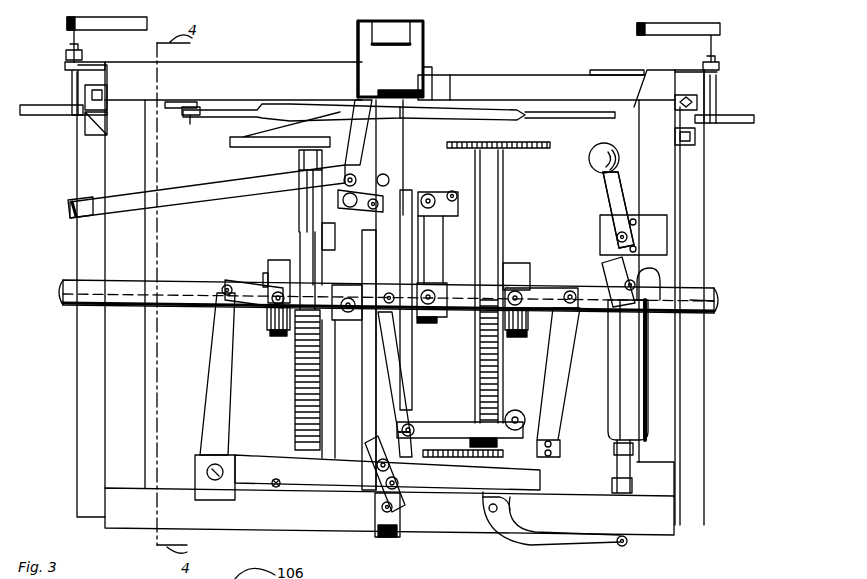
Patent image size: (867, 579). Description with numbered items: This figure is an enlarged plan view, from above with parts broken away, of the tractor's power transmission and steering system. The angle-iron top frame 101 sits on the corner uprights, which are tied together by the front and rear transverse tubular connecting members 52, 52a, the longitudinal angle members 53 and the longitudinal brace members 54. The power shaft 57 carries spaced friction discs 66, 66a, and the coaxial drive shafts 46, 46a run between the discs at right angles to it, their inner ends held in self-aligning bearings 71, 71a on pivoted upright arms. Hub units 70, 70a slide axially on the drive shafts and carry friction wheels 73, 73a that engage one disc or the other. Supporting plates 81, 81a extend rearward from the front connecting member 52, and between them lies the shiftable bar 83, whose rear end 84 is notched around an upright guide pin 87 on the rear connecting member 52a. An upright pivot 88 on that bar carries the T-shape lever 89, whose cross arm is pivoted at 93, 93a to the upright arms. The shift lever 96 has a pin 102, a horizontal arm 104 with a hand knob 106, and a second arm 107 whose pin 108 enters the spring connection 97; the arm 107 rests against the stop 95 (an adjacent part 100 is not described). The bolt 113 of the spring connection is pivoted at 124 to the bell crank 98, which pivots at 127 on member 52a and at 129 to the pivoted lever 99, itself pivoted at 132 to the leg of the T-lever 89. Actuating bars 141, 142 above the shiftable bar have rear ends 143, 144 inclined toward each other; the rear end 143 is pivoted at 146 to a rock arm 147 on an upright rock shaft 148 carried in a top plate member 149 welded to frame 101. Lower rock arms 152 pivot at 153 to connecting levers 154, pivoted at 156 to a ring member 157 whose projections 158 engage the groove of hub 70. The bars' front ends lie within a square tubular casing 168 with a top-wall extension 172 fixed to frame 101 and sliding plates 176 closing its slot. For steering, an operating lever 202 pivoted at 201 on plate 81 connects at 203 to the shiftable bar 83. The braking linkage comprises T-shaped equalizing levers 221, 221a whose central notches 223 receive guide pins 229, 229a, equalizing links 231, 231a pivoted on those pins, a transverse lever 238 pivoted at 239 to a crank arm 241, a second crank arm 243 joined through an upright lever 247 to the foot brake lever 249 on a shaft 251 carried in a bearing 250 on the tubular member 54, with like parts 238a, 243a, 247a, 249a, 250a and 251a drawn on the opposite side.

The top frame 101 is at (244, 58).
The front connecting member 52 is at (520, 78).
The longitudinal angle members 53 is at (100, 230).
The longitudinal brace members 54 is at (85, 251).
The rear connecting member 52a is at (467, 515).
The bolt 113 is at (674, 462).
The foot brake lever 249 is at (72, 33).
The upright lever 247 is at (66, 57).
The second crank arm 243 is at (95, 65).
The shaft 251 is at (35, 115).
The bearing 250 is at (87, 120).
The bolt 249a is at (714, 52).
The nut 247a is at (720, 70).
The bracket 243a is at (621, 70).
The block 250a is at (690, 115).
The rod 251a is at (734, 124).
The extension 172 is at (394, 73).
The sliding plates 176 is at (410, 30).
The square tubular casing 168 is at (358, 33).
The supporting plate 81a is at (440, 95).
The supporting plate 81 is at (347, 127).
The lever 238 is at (294, 97).
The bar 238a is at (550, 113).
The crank arm 241 is at (173, 101).
The pivot 239 is at (190, 124).
The friction disc 66a is at (245, 147).
The equalizing link 231 is at (298, 158).
The pivot 201 is at (337, 180).
The operating lever 202 is at (92, 205).
The upright guide pin 229 is at (338, 200).
The pivot 203 is at (389, 180).
The central notch 223 is at (297, 215).
The equalizing lever 221 is at (312, 230).
The self-aligning bearing 71 is at (341, 284).
The pivot 93 is at (352, 312).
The upright pivot 88 is at (389, 293).
The actuating bar 141 is at (362, 357).
The T-shape lever 89 is at (388, 356).
The shiftable bar 83 is at (386, 398).
The actuating bar 142 is at (413, 372).
The pin 229a is at (459, 198).
The equalizing lever 221a is at (430, 252).
The pivot 93a is at (435, 304).
The self-aligning bearing 71a is at (425, 324).
The equalizing link 231a is at (423, 160).
The friction wheel 73a is at (486, 217).
The inwardly extended projections 158 is at (513, 264).
The hub unit 70a is at (530, 275).
The pivot 129 is at (520, 423).
The pivoted lever 99 is at (460, 430).
The pivot 132 is at (413, 428).
The rear end 143 is at (370, 497).
The rear end 84 is at (376, 508).
The upright guide pin 87 is at (383, 528).
The power shaft 57 is at (389, 540).
The pivot 146 is at (397, 500).
The rear end 144 is at (405, 460).
The friction disc 66 is at (250, 454).
The rock arms 152 is at (215, 358).
The top plate member 149 is at (205, 478).
The upright rock shaft 148 is at (210, 466).
The connecting levers 154 is at (247, 300).
The pivot 153 is at (224, 285).
The ring member 157 is at (277, 268).
The hub unit 70 is at (263, 274).
The pivot 156 is at (278, 338).
The friction wheel 73 is at (295, 395).
The rock arm 147 is at (274, 488).
The drive shaft 46 is at (63, 306).
The drive shaft 46a is at (702, 298).
The hand knob 106 is at (644, 155).
The horizontal arm 104 is at (610, 208).
The shift lever 96 is at (594, 193).
The pin 102 is at (627, 236).
The stop 95 is at (636, 222).
The pin 100 is at (636, 250).
The second arm 107 is at (649, 267).
The pin 108 is at (635, 286).
The spring connection 97 is at (659, 358).
The bell crank 98 is at (553, 548).
The pivot 124 is at (628, 541).
The pivot 127 is at (494, 513).